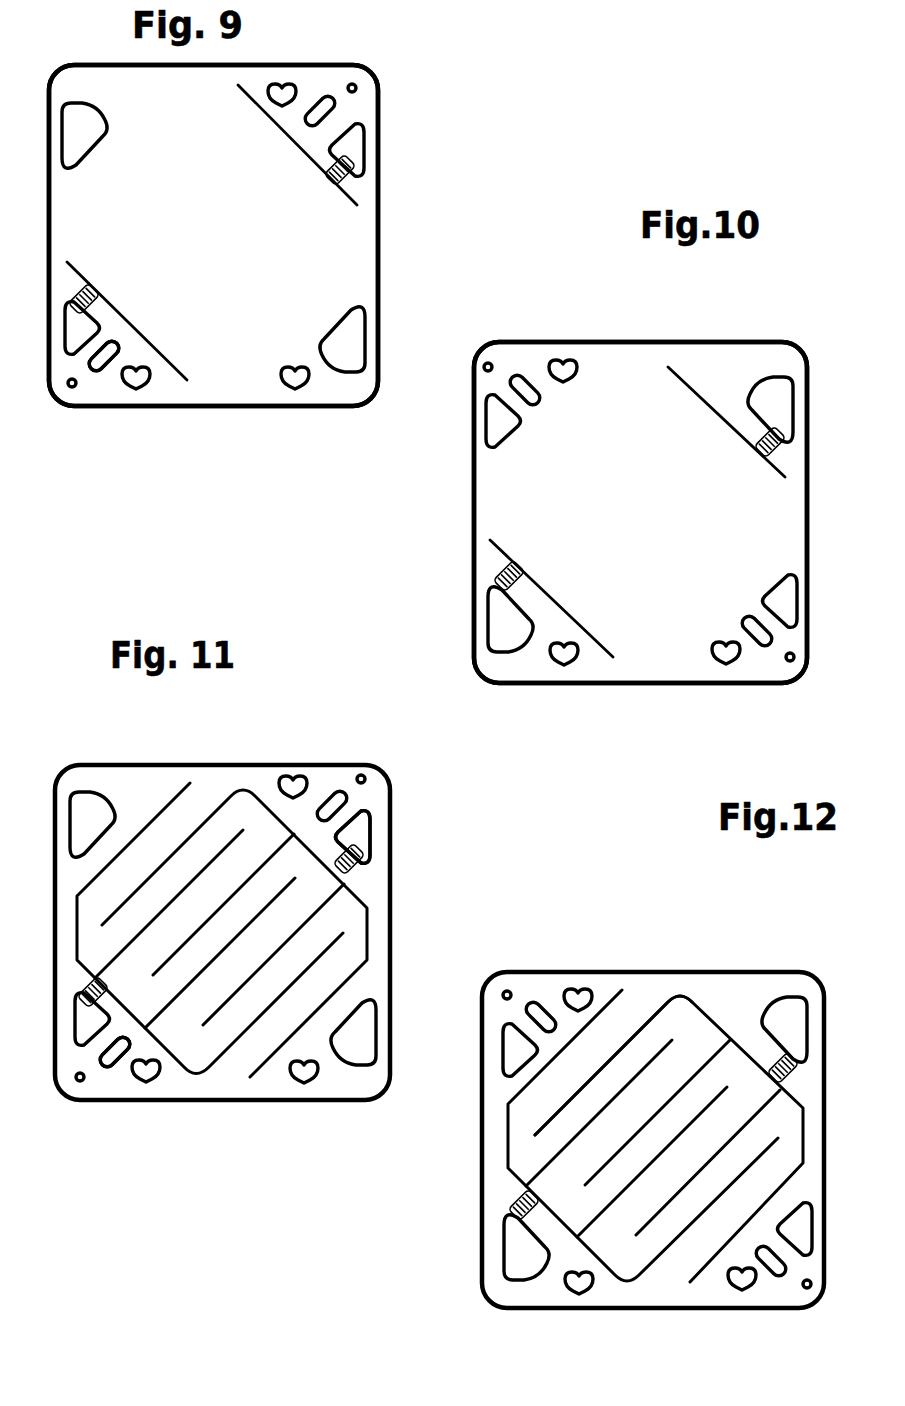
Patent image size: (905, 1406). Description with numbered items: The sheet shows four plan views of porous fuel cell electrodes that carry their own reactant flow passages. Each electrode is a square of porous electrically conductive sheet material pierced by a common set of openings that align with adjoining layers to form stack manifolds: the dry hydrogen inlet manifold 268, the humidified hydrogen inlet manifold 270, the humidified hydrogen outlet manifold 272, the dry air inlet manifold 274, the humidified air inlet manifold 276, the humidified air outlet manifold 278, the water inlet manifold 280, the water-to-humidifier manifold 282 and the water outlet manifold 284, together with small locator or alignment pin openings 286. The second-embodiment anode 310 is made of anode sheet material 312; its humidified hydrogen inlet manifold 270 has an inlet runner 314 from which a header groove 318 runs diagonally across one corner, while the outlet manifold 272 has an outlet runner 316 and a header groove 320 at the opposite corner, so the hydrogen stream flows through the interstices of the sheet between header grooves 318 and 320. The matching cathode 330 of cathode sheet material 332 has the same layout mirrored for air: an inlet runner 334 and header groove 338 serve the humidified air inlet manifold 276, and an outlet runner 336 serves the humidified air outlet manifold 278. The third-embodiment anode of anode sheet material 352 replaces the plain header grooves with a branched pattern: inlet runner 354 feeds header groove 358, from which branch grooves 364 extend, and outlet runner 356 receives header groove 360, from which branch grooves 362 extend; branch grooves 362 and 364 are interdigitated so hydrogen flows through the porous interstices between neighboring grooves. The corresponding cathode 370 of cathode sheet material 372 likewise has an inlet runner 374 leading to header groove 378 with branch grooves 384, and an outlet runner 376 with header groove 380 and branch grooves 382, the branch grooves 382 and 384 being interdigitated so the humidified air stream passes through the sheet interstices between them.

In FIG. 9, the dry hydrogen inlet manifold 268 is at (140, 388).
In FIG. 10, the dry hydrogen inlet manifold 268 is at (725, 663).
In FIG. 11, the dry hydrogen inlet manifold 268 is at (146, 1083).
In FIG. 12, the dry hydrogen inlet manifold 268 is at (743, 1291).
In FIG. 9, the humidified hydrogen inlet manifold 270 is at (350, 135).
In FIG. 10, the humidified hydrogen inlet manifold 270 is at (498, 424).
In FIG. 11, the humidified hydrogen inlet manifold 270 is at (362, 838).
In FIG. 12, the humidified hydrogen inlet manifold 270 is at (505, 1060).
In FIG. 9, the humidified hydrogen outlet manifold 272 is at (102, 368).
In FIG. 10, the humidified hydrogen outlet manifold 272 is at (790, 604).
In FIG. 11, the humidified hydrogen outlet manifold 272 is at (108, 1066).
In FIG. 12, the humidified hydrogen outlet manifold 272 is at (803, 1240).
In FIG. 9, the dry air inlet manifold 274 is at (296, 388).
In FIG. 10, the dry air inlet manifold 274 is at (563, 665).
In FIG. 11, the dry air inlet manifold 274 is at (305, 1083).
In FIG. 12, the dry air inlet manifold 274 is at (578, 1294).
In FIG. 9, the humidified air inlet manifold 276 is at (86, 122).
In FIG. 10, the humidified air inlet manifold 276 is at (760, 395).
In FIG. 11, the humidified air inlet manifold 276 is at (90, 810).
In FIG. 12, the humidified air inlet manifold 276 is at (792, 1012).
In FIG. 9, the humidified air outlet manifold 278 is at (350, 322).
In FIG. 10, the humidified air outlet manifold 278 is at (500, 622).
In FIG. 11, the humidified air outlet manifold 278 is at (350, 1040).
In FIG. 12, the humidified air outlet manifold 278 is at (518, 1250).
In FIG. 9, the water inlet manifold 280 is at (282, 90).
In FIG. 10, the water inlet manifold 280 is at (566, 364).
In FIG. 11, the water inlet manifold 280 is at (290, 784).
In FIG. 12, the water inlet manifold 280 is at (577, 992).
In FIG. 9, the water-to-humidifier manifold 282 is at (115, 375).
In FIG. 10, the water-to-humidifier manifold 282 is at (765, 641).
In FIG. 11, the water-to-humidifier manifold 282 is at (122, 1062).
In FIG. 12, the water-to-humidifier manifold 282 is at (780, 1273).
In FIG. 9, the water outlet manifold 284 is at (320, 108).
In FIG. 10, the water outlet manifold 284 is at (522, 384).
In FIG. 11, the water outlet manifold 284 is at (328, 806).
In FIG. 12, the water outlet manifold 284 is at (540, 1008).
In FIG. 9, the locator or alignment pin openings 286 is at (357, 87).
In FIG. 10, the locator or alignment pin openings 286 is at (487, 364).
In FIG. 11, the locator or alignment pin openings 286 is at (363, 777).
In FIG. 12, the locator or alignment pin openings 286 is at (507, 991).
In FIG. 9, the anode 310 is at (381, 55).
In FIG. 9, the anode sheet material 312 is at (355, 233).
In FIG. 9, the inlet runner 314 is at (350, 182).
In FIG. 9, the outlet runner 316 is at (70, 302).
In FIG. 9, the header groove 318 is at (352, 108).
In FIG. 9, the header groove 320 is at (117, 356).
In FIG. 10, the cathode 330 is at (764, 335).
In FIG. 10, the cathode sheet material 332 is at (662, 633).
In FIG. 10, the inlet runner 334 is at (785, 450).
In FIG. 10, the outlet runner 336 is at (503, 572).
In FIG. 10, the header groove 338 is at (676, 368).
In FIG. 11, the anode sheet material 352 is at (375, 972).
In FIG. 11, the inlet runner 354 is at (363, 875).
In FIG. 11, the outlet runner 356 is at (85, 993).
In FIG. 11, the header groove 358 is at (352, 820).
In FIG. 11, the header groove 360 is at (138, 1027).
In FIG. 11, the branch grooves 362 is at (223, 840).
In FIG. 11, the branch grooves 364 is at (222, 1010).
In FIG. 12, the cathode 370 is at (738, 962).
In FIG. 12, the cathode sheet material 372 is at (657, 1048).
In FIG. 12, the inlet runner 374 is at (786, 1060).
In FIG. 12, the outlet runner 376 is at (518, 1208).
In FIG. 12, the header groove 378 is at (728, 1035).
In FIG. 12, the header groove 380 is at (563, 1230).
In FIG. 12, the branch grooves 382 is at (685, 987).
In FIG. 12, the branch grooves 384 is at (697, 1268).